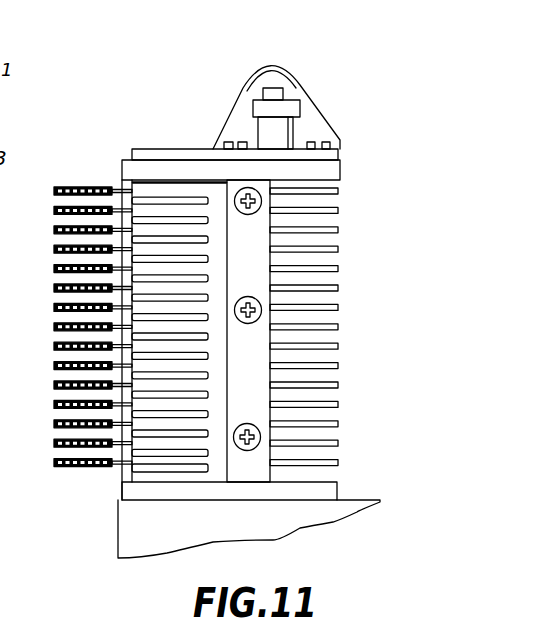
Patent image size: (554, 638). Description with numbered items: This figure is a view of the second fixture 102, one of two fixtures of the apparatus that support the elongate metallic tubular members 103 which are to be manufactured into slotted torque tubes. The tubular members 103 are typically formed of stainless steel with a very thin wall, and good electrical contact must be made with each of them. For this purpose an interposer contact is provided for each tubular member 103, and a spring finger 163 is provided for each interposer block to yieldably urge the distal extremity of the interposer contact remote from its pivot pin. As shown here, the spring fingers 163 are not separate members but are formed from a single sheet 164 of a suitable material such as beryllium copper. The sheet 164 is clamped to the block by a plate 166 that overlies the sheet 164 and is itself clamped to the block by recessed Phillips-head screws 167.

The second fixture 102 is at (236, 98).
The tubular members 103 is at (72, 206).
The spring finger 163 is at (162, 188).
The sheet 164 is at (213, 188).
The plate 166 is at (238, 465).
The recessed Phillips-head screws 167 is at (263, 437).